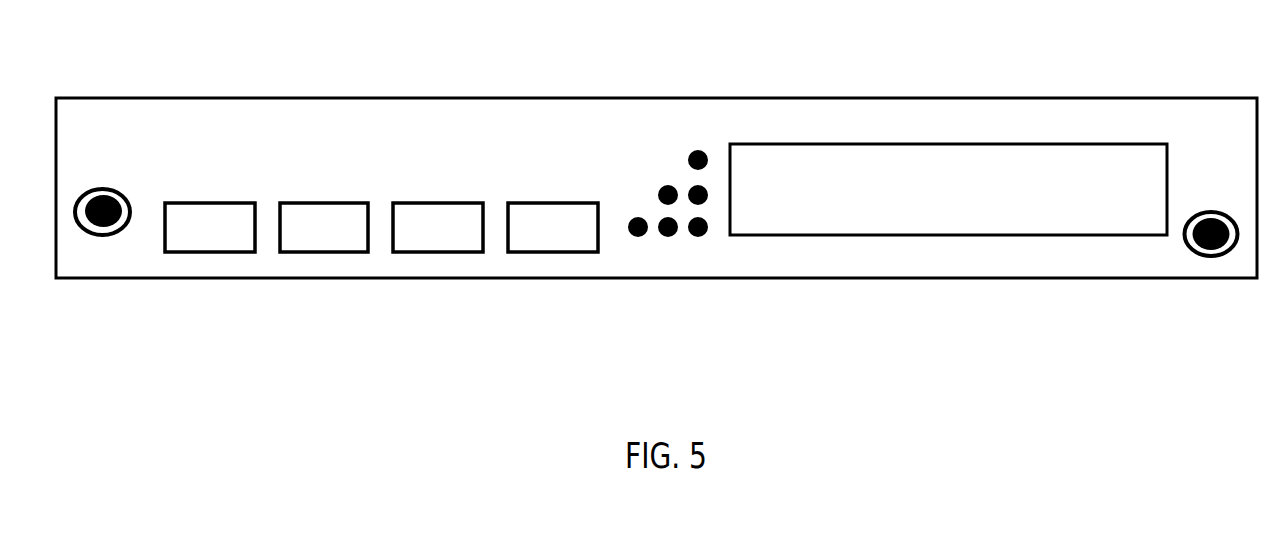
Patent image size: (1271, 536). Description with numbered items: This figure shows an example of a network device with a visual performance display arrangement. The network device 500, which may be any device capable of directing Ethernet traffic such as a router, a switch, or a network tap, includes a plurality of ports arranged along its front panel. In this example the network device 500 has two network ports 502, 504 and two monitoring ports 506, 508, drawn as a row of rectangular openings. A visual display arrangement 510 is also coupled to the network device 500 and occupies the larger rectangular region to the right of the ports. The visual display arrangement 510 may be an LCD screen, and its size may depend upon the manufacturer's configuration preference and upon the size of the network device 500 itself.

The network device 500 is at (1045, 98).
The network port 502 is at (557, 221).
The network port 504 is at (442, 227).
The monitoring port 506 is at (335, 228).
The monitoring port 508 is at (216, 226).
The visual display arrangement 510 is at (948, 189).